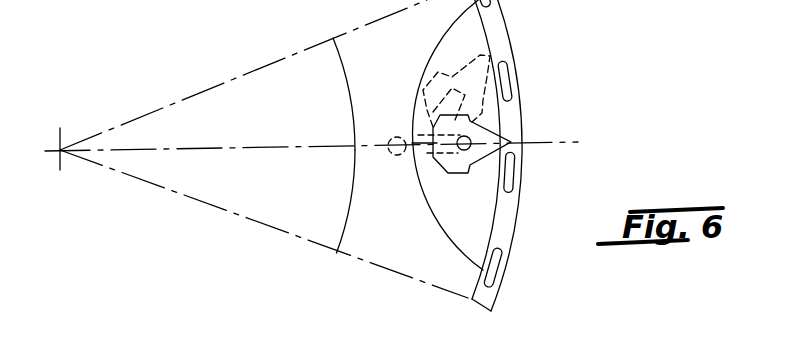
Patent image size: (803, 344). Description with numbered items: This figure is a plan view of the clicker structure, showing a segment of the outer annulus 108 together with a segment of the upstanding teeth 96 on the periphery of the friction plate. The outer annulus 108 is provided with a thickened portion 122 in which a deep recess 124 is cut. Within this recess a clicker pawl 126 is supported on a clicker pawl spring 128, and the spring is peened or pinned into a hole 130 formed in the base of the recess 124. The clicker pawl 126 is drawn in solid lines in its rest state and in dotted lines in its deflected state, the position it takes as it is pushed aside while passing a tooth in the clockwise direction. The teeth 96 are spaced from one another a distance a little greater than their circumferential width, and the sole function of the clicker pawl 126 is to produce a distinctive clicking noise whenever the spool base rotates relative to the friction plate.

The teeth 96 is at (510, 72).
The outer annulus 108 is at (408, 68).
The thickened portion 122 is at (425, 243).
The deep recess 124 is at (475, 230).
The clicker pawl 126 is at (493, 128).
The clicker pawl spring 128 is at (440, 113).
The hole 130 is at (398, 152).